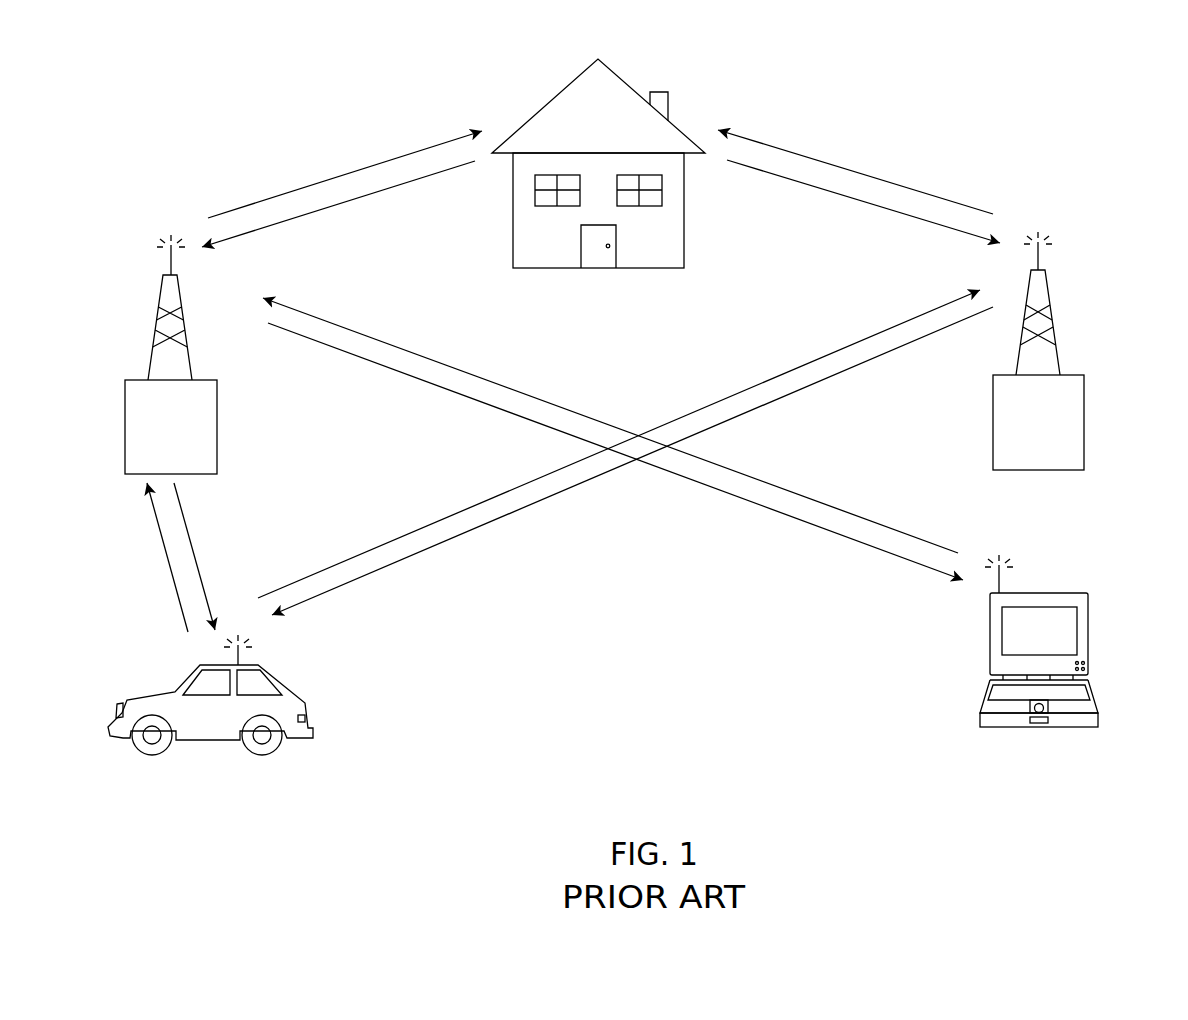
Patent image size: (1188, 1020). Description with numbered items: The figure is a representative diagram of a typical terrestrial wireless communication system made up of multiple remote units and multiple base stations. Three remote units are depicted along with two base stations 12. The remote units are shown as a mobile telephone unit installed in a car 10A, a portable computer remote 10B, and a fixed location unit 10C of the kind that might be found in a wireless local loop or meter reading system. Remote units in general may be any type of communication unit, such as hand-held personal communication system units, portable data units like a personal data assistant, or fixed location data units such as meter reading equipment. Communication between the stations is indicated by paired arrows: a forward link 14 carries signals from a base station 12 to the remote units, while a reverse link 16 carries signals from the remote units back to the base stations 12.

The mobile telephone unit installed in a car 10A is at (262, 663).
The portable computer remote 10B is at (1072, 593).
The fixed location unit 10C is at (620, 77).
The base station 12 is at (205, 380).
The forward link 14 is at (350, 172).
The reverse link 16 is at (297, 218).